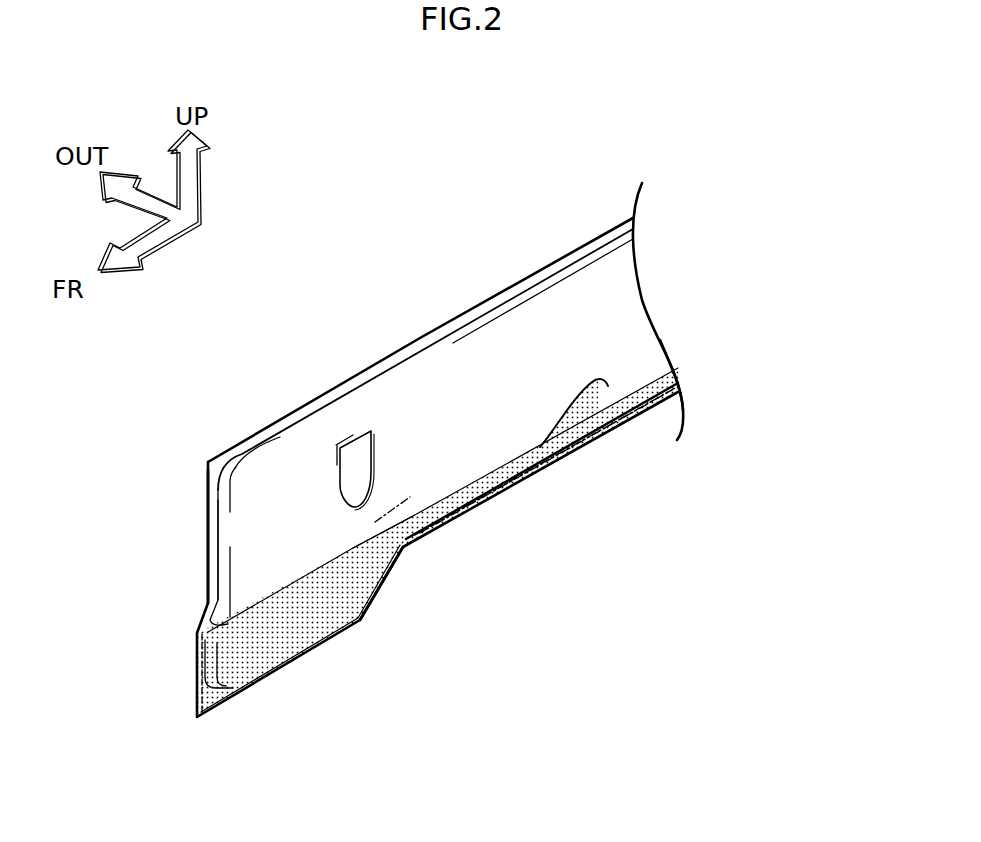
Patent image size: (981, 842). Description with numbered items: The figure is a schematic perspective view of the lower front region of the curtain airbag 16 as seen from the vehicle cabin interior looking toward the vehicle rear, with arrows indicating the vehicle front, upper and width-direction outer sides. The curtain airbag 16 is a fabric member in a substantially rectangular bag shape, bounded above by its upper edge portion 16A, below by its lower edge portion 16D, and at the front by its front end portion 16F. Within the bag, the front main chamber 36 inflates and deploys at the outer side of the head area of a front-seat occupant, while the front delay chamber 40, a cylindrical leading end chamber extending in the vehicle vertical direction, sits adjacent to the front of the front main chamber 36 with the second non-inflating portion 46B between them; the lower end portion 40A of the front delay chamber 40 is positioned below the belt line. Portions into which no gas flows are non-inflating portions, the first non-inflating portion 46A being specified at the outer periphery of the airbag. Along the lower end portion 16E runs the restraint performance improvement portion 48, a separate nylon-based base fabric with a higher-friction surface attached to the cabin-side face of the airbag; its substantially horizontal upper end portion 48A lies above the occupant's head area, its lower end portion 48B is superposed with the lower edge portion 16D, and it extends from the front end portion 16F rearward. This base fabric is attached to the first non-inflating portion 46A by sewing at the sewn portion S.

The curtain airbag 16 is at (463, 314).
The upper edge portion 16A is at (535, 270).
The lower edge portion 16D is at (416, 544).
The lower end portion 16E is at (677, 380).
The front end portion 16F is at (209, 502).
The front main chamber 36 is at (441, 438).
The front delay chamber 40 is at (264, 516).
The lower end portion 40A is at (277, 669).
The first non-inflating portion 46A is at (207, 578).
The second non-inflating portion 46B is at (360, 470).
The restraint performance improvement portion 48 is at (211, 694).
The upper end portion 48A is at (357, 547).
The lower end portion 48B is at (345, 630).
The sewn portion S is at (612, 436).